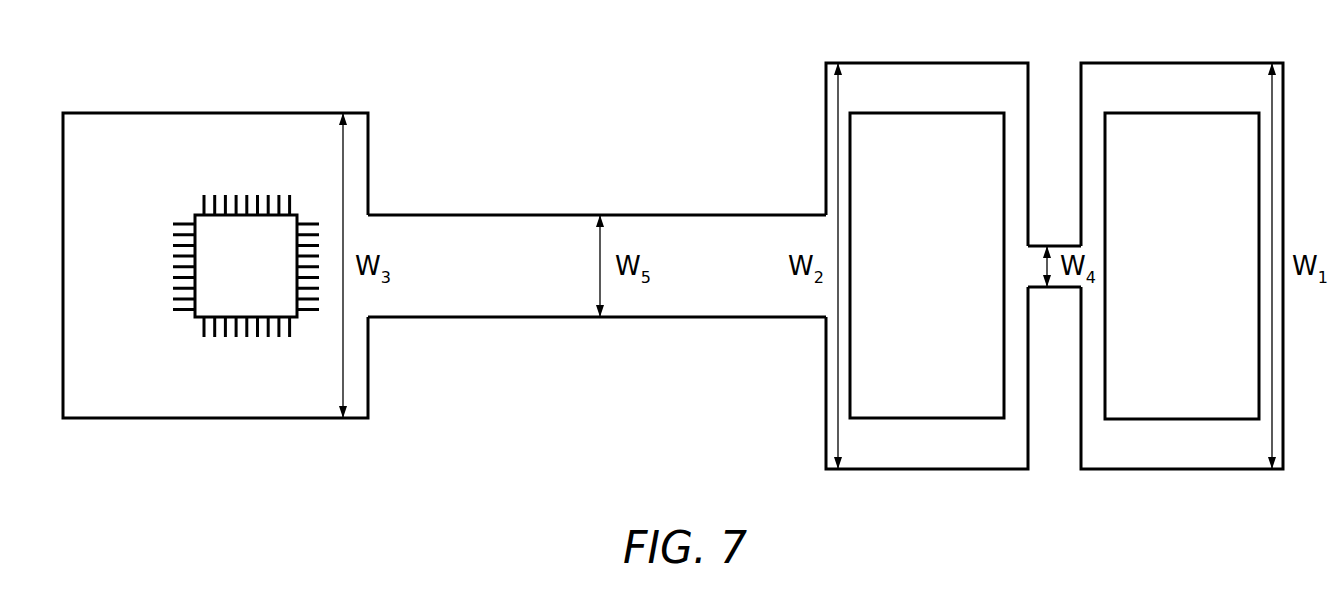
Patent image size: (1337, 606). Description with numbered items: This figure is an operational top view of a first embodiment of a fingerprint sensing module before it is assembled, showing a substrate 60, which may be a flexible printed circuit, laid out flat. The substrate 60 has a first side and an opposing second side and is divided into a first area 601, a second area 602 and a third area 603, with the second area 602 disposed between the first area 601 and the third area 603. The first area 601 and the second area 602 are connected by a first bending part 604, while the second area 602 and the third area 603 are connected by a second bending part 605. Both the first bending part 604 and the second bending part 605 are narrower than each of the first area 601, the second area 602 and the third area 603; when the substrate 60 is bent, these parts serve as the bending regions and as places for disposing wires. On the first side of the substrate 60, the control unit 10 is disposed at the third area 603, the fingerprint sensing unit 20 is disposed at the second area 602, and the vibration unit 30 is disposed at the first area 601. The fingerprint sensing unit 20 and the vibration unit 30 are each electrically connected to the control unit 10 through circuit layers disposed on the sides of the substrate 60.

The substrate 60 is at (673, 241).
The third area 603 is at (293, 133).
The second bending part 605 is at (510, 232).
The second area 602 is at (928, 90).
The first bending part 604 is at (1033, 258).
The first area 601 is at (1182, 90).
The control unit 10 is at (207, 302).
The fingerprint sensing unit 20 is at (928, 400).
The vibration unit 30 is at (1182, 400).